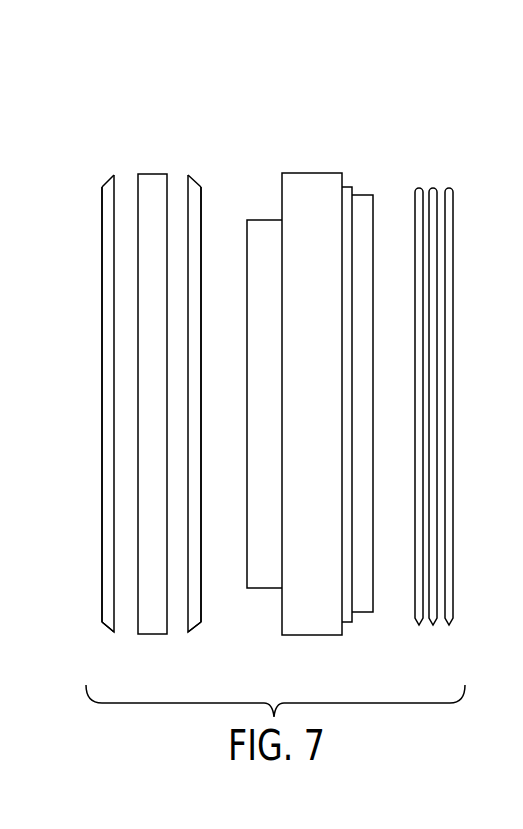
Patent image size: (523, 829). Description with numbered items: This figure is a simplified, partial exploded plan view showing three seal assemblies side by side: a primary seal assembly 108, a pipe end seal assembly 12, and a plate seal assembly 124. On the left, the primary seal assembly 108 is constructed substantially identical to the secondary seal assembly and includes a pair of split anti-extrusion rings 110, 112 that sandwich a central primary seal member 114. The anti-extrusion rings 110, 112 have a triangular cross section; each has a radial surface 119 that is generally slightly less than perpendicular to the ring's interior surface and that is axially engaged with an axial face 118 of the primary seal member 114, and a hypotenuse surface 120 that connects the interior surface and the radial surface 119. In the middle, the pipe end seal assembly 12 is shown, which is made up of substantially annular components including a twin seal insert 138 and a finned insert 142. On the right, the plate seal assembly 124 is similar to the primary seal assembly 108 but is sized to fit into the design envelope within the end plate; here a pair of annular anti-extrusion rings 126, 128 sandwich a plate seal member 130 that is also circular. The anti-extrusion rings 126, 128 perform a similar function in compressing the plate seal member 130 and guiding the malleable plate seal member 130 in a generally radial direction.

The pipe end seal assembly 12 is at (315, 107).
The primary seal assembly 108 is at (160, 101).
The split anti-extrusion ring 110 is at (103, 169).
The split anti-extrusion ring 112 is at (199, 176).
The primary seal member 114 is at (157, 166).
The axial face 118 is at (137, 177).
The radial surface 119 is at (186, 632).
The hypotenuse surface 120 is at (108, 323).
The plate seal assembly 124 is at (438, 107).
The annular anti-extrusion ring 126 is at (418, 186).
The annular anti-extrusion ring 128 is at (451, 186).
The plate seal member 130 is at (433, 184).
The twin seal insert 138 is at (320, 171).
The finned insert 142 is at (360, 621).